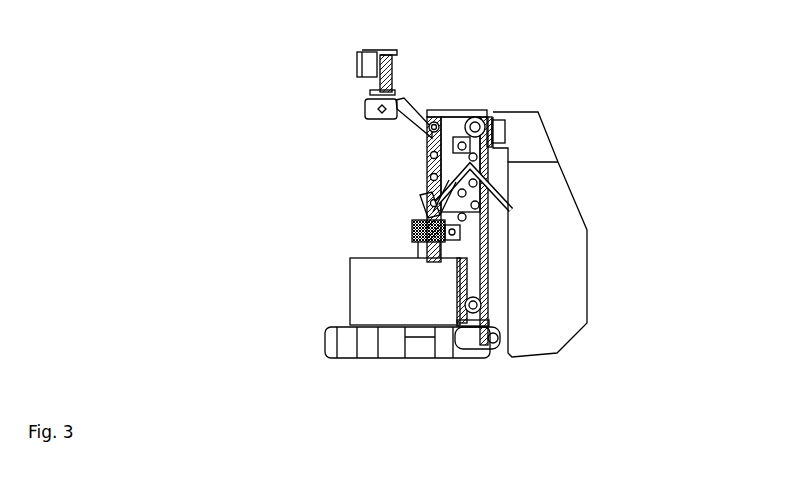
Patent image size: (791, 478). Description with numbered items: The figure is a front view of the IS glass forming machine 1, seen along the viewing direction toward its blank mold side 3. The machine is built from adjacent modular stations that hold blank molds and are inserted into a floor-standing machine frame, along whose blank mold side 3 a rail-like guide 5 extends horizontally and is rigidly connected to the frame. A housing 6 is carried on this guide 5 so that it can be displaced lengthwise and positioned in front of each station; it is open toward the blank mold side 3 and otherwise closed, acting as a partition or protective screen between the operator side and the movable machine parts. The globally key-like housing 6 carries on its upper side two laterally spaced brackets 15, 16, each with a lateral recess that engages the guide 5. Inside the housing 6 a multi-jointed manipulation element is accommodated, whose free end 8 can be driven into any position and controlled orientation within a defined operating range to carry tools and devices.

The glass forming machine 1 is at (290, 146).
The blank mold side 3 is at (670, 206).
The rail-like guide 5 is at (499, 116).
The housing 6 is at (558, 268).
The free end 8 is at (422, 211).
The bracket 15 is at (593, 222).
The bracket 16 is at (538, 113).